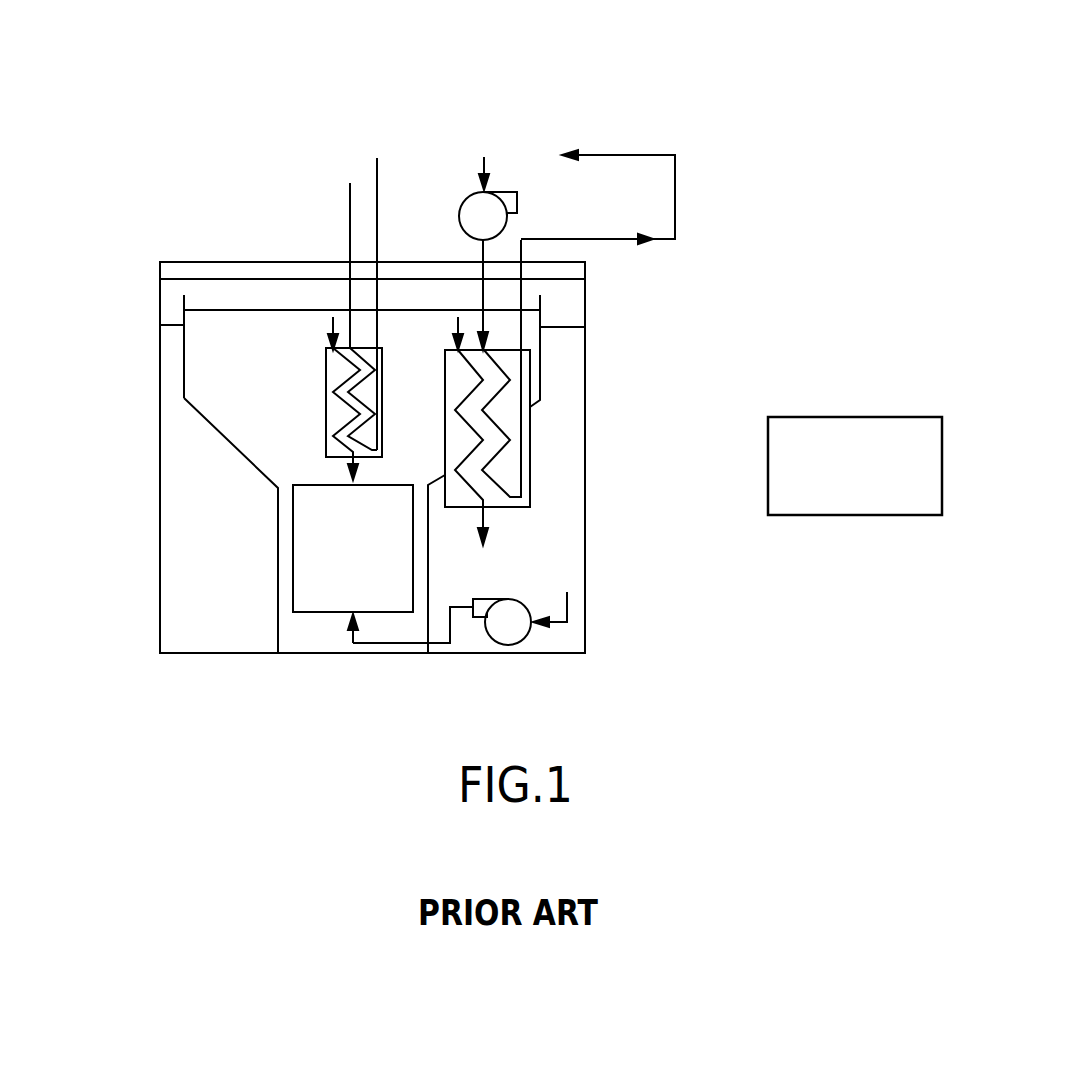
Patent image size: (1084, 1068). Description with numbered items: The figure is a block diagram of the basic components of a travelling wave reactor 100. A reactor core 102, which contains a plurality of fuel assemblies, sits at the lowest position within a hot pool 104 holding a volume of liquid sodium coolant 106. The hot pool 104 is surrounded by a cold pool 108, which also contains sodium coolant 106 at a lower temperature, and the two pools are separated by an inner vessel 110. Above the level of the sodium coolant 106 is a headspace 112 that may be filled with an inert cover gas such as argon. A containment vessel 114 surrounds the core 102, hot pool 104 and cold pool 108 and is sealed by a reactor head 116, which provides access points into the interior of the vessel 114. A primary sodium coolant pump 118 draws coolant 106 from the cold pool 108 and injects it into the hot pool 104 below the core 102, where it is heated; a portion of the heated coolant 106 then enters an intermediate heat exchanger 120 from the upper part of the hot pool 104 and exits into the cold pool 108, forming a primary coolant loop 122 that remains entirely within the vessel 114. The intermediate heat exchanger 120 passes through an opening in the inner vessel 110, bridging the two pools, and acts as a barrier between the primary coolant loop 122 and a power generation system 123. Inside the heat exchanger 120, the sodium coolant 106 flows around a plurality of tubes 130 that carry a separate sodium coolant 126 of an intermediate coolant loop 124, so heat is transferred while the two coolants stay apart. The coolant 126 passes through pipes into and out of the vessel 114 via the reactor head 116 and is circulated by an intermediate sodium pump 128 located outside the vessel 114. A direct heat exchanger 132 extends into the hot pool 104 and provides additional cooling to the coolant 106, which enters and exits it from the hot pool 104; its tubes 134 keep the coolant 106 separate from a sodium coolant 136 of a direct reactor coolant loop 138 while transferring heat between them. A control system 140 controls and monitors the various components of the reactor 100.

The travelling wave reactor 100 is at (772, 90).
The reactor core 102 is at (315, 612).
The hot pool 104 is at (250, 353).
The liquid sodium coolant 106 is at (228, 344).
The cold pool 108 is at (170, 428).
The inner vessel 110 is at (263, 475).
The headspace 112 is at (209, 281).
The containment vessel 114 is at (160, 612).
The reactor head 116 is at (268, 262).
The primary sodium coolant pump 118 is at (525, 645).
The intermediate heat exchanger 120 is at (530, 465).
The primary coolant loop 122 is at (629, 565).
The power generation system 123 is at (530, 82).
The intermediate coolant loop 124 is at (766, 246).
The sodium coolant of the intermediate coolant loop 126 is at (482, 250).
The intermediate sodium pump 128 is at (517, 197).
The tubes 130 is at (502, 430).
The direct heat exchanger 132 is at (323, 387).
The tubes 134 is at (367, 423).
The sodium coolant of the direct reactor coolant loop 136 is at (377, 158).
The direct reactor coolant loop 138 is at (356, 151).
The control system 140 is at (843, 417).